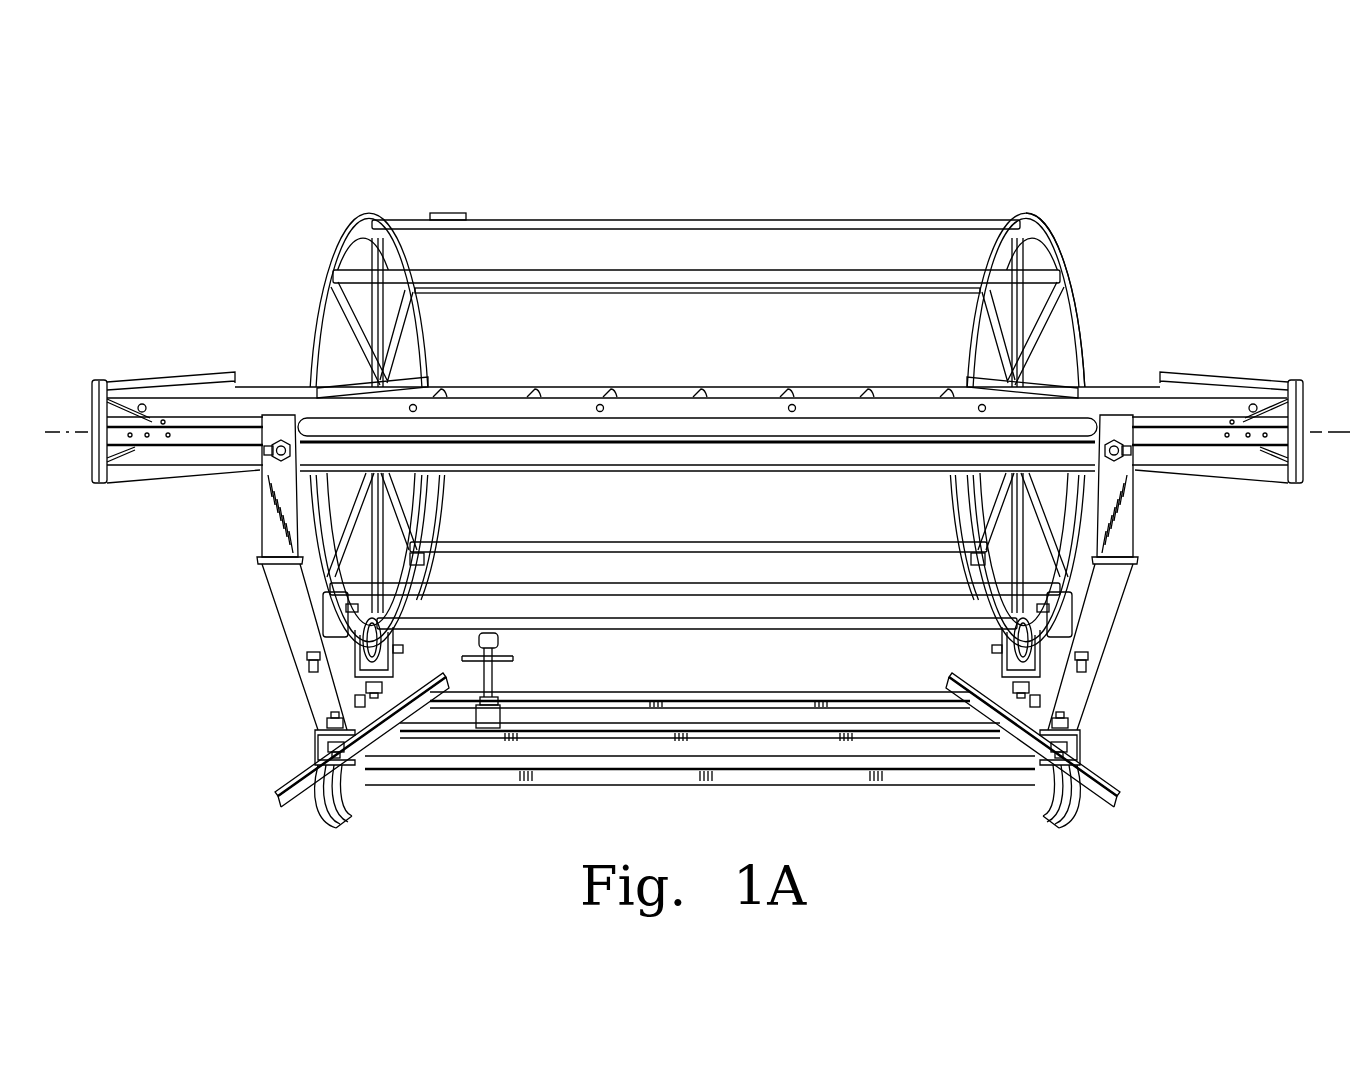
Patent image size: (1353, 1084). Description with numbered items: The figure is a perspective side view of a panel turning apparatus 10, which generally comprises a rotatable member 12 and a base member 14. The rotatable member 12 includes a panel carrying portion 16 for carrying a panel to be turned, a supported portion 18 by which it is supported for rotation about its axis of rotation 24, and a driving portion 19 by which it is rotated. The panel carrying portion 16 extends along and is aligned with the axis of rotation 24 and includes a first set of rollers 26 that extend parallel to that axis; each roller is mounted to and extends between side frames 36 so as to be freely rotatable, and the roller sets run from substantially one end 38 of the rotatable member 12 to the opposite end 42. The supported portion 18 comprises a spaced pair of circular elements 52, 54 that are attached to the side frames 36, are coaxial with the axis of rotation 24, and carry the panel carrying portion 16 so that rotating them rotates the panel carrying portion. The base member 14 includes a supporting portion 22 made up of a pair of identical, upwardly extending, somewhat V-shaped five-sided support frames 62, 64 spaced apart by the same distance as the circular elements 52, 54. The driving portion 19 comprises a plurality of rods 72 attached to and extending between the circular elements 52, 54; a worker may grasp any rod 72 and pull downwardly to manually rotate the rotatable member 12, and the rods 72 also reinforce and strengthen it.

The panel turning apparatus 10 is at (215, 193).
The rotatable member 12 is at (1108, 266).
The base member 14 is at (1178, 627).
The panel carrying portion 16 is at (533, 387).
The supported portion 18 is at (1058, 230).
The driving portion 19 is at (656, 217).
The supporting portion 22 is at (1107, 641).
The axis of rotation 24 is at (1322, 432).
The first set of rollers 26 is at (862, 396).
The side frames 36 is at (637, 392).
The end 38 is at (98, 378).
The opposite end 42 is at (1297, 378).
The circular element 52 is at (366, 212).
The circular element 54 is at (1025, 215).
The support frame 62 is at (308, 707).
The support frame 64 is at (1113, 581).
The rods 72 is at (530, 285).